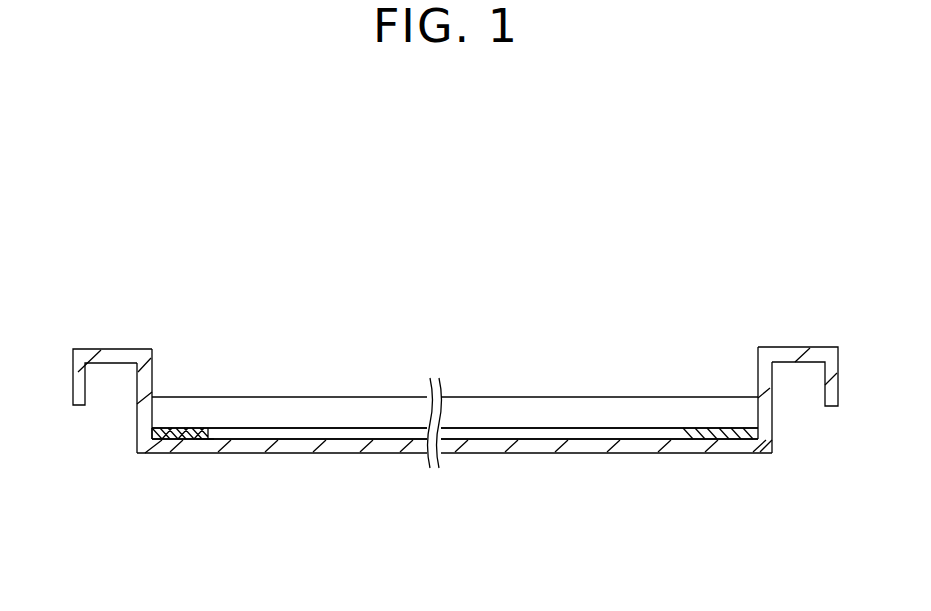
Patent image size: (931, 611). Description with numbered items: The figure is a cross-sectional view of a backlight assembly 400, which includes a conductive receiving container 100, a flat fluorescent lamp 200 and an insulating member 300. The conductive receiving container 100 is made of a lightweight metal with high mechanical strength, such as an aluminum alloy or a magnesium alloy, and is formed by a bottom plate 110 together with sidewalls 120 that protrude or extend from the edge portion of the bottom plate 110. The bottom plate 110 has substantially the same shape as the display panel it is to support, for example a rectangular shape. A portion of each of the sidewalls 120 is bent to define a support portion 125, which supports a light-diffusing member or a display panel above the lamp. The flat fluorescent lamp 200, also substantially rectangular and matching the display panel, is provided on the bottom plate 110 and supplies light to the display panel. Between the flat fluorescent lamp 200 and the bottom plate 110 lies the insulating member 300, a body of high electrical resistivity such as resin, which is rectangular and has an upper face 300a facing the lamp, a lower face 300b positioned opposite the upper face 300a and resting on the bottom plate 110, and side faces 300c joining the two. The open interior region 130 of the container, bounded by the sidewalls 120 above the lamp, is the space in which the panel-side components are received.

The conductive receiving container 100 is at (718, 460).
The bottom plate 110 is at (625, 446).
The sidewalls 120 is at (773, 431).
The support portion 125 is at (107, 353).
The receiving space 130 is at (588, 375).
The flat fluorescent lamp 200 is at (352, 396).
The insulating member 300 is at (237, 430).
The upper face 300a is at (188, 433).
The lower face 300b is at (205, 441).
The side faces 300c is at (163, 422).
The backlight assembly 400 is at (668, 278).